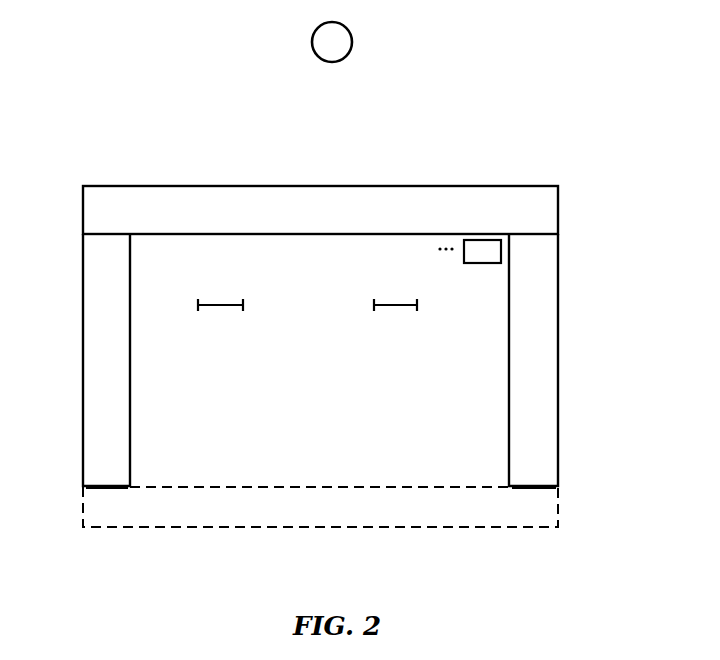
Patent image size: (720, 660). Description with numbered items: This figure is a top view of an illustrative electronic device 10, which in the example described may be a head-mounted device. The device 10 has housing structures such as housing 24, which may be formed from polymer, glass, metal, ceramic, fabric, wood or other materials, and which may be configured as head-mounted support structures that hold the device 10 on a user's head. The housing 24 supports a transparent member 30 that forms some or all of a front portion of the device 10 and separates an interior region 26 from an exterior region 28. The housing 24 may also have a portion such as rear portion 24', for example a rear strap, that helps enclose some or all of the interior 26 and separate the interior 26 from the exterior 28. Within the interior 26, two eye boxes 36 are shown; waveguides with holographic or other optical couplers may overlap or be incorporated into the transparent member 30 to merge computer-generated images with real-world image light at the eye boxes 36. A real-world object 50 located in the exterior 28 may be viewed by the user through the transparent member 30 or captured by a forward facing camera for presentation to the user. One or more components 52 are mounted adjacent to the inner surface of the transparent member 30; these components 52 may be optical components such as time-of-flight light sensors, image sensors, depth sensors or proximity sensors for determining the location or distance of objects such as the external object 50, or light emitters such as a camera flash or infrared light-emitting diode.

The electronic device 10 is at (632, 155).
The housing 24 is at (321, 360).
The rear portion of housing 24' is at (320, 534).
The interior region 26 is at (485, 372).
The exterior region 28 is at (455, 80).
The transparent member 30 is at (408, 197).
The eye boxes 36 is at (199, 305).
The real-world object 50 is at (352, 43).
The component 52 is at (491, 265).